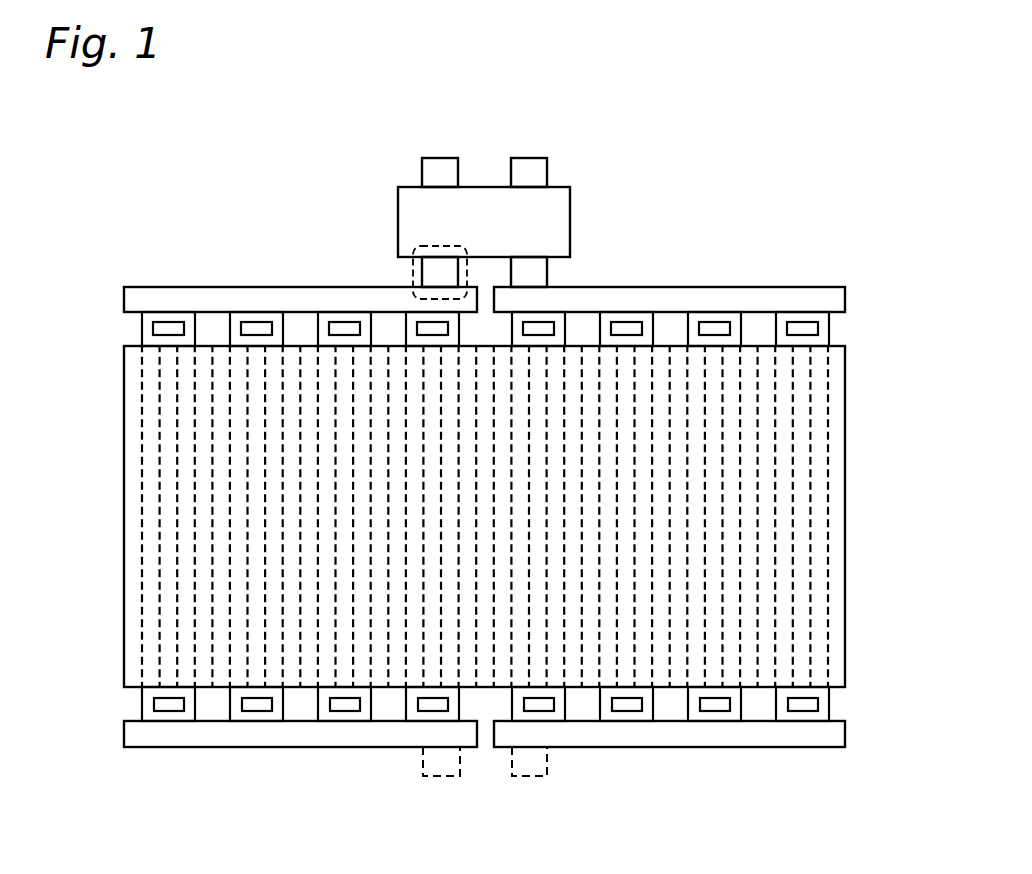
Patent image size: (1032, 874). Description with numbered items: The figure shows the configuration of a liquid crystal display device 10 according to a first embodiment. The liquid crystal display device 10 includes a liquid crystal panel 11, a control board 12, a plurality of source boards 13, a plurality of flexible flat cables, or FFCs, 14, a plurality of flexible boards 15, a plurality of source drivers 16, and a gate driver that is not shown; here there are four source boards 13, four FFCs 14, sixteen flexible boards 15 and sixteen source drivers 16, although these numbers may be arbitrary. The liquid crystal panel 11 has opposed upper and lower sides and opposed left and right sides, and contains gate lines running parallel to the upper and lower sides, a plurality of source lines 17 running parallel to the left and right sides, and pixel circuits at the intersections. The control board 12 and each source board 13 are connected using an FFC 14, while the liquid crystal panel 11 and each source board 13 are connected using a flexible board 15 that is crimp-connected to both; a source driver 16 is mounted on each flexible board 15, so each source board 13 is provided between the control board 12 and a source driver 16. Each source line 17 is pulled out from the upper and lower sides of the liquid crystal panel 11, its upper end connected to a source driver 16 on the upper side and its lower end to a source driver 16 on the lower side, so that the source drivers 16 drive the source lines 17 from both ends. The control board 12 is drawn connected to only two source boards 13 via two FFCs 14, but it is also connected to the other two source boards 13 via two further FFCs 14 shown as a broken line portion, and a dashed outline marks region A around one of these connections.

The liquid crystal display device 10 is at (728, 199).
The liquid crystal panel 11 is at (845, 517).
The control board 12 is at (570, 223).
The source board 13 is at (124, 298).
The flexible flat cable 14 is at (443, 272).
The flexible board 15 is at (333, 716).
The source driver 16 is at (627, 705).
The source line 17 is at (812, 585).
The region A is at (413, 272).